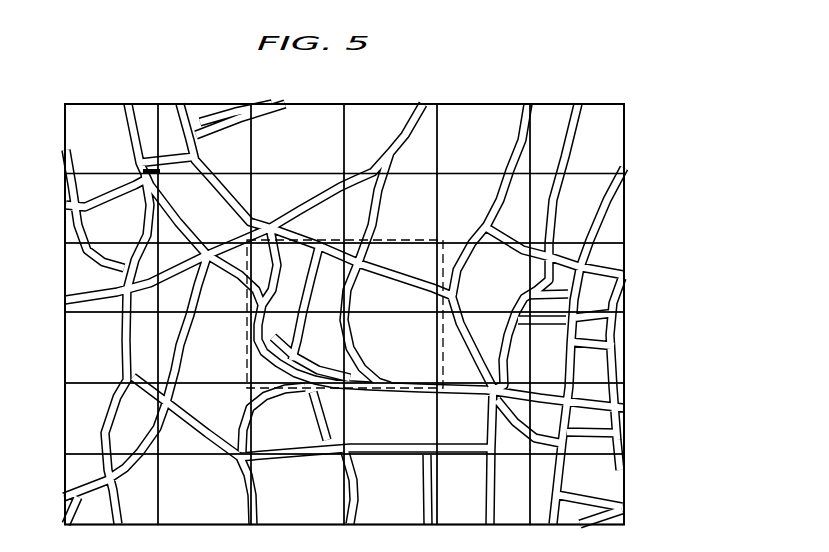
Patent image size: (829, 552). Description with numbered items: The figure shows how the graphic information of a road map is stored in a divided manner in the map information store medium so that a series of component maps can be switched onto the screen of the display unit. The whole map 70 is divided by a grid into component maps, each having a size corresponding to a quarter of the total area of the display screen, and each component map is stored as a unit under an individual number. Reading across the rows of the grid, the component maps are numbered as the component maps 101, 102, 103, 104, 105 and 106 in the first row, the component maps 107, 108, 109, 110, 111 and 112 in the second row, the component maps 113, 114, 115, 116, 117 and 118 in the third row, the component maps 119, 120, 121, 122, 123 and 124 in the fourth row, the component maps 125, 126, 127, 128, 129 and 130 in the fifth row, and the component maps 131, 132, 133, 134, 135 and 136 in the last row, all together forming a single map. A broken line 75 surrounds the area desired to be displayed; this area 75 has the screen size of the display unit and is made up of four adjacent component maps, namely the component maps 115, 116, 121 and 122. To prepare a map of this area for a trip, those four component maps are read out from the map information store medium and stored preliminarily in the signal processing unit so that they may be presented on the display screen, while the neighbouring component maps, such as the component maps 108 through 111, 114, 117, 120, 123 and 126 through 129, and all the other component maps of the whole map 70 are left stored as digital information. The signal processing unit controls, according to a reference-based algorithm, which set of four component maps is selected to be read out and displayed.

The whole map 70 is at (641, 200).
The broken line 75 is at (247, 357).
The component map 101 is at (95, 129).
The component map 102 is at (214, 127).
The component map 103 is at (327, 130).
The component map 104 is at (379, 130).
The component map 105 is at (470, 130).
The component map 106 is at (564, 130).
The component map 107 is at (107, 200).
The component map 108 is at (189, 200).
The component map 109 is at (284, 200).
The component map 110 is at (418, 200).
The component map 111 is at (474, 200).
The component map 112 is at (594, 200).
The component map 113 is at (99, 285).
The component map 114 is at (233, 306).
The component map 115 is at (307, 272).
The component map 116 is at (414, 270).
The component map 117 is at (500, 283).
The component map 118 is at (597, 306).
The component map 119 is at (96, 343).
The component map 120 is at (229, 343).
The component map 121 is at (331, 348).
The component map 122 is at (400, 340).
The component map 123 is at (496, 336).
The component map 124 is at (602, 340).
The component map 125 is at (95, 413).
The component map 126 is at (228, 413).
The component map 127 is at (292, 428).
The component map 128 is at (404, 430).
The component map 129 is at (470, 438).
The component map 130 is at (600, 413).
The component map 131 is at (93, 483).
The component map 132 is at (201, 483).
The component map 133 is at (311, 483).
The component map 134 is at (396, 483).
The component map 135 is at (469, 483).
The component map 136 is at (602, 483).